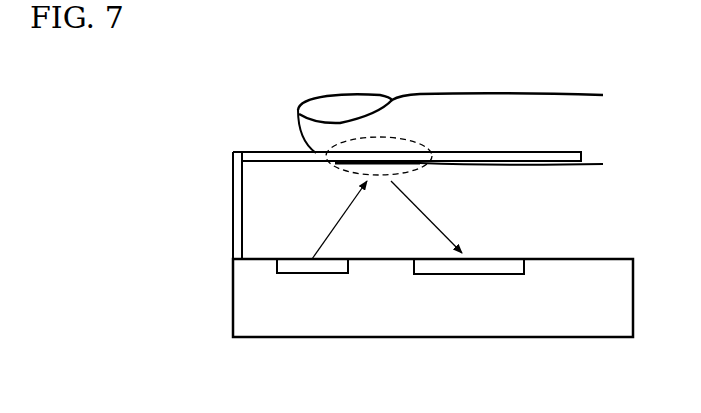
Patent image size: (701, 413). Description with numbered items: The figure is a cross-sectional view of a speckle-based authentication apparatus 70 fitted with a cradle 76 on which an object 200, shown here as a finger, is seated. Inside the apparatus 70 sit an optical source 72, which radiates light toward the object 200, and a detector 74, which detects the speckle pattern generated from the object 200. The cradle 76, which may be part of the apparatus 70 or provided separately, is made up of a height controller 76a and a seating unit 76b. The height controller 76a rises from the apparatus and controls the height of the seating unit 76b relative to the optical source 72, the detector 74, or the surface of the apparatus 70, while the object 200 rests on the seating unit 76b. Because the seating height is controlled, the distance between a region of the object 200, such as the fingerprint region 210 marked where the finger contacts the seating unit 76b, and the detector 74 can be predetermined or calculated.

The speckle-based authentication apparatus 70 is at (240, 306).
The optical source 72 is at (312, 273).
The detector 74 is at (468, 274).
The cradle 76 is at (346, 188).
The height controller 76a is at (240, 185).
The seating unit 76b is at (273, 157).
The object 200 is at (433, 102).
The fingerprint region 210 is at (422, 148).